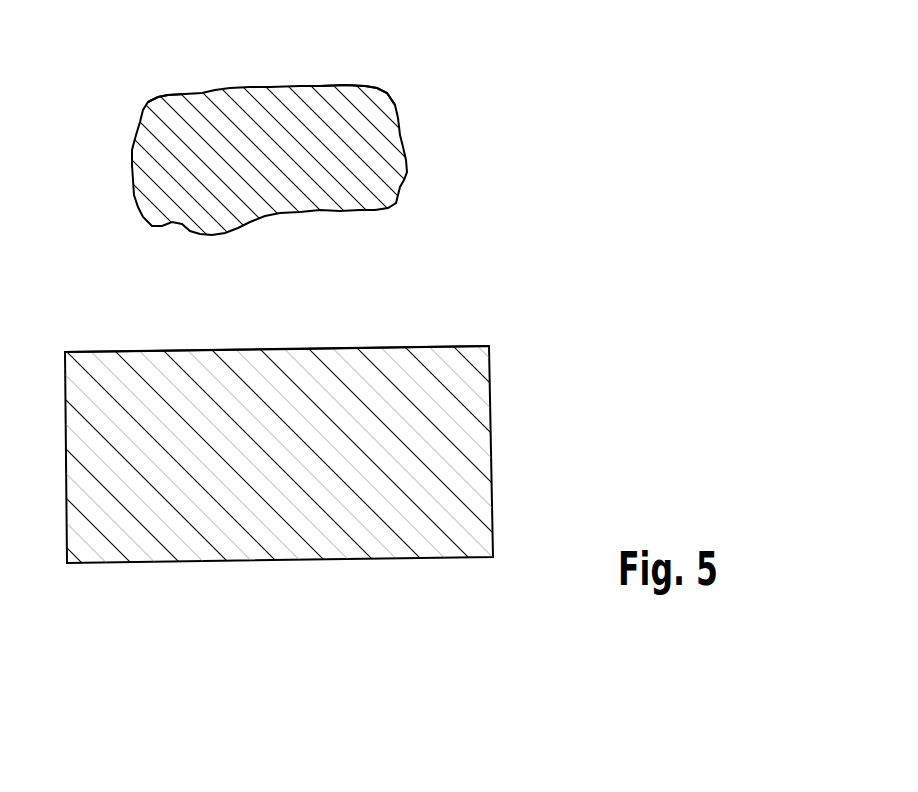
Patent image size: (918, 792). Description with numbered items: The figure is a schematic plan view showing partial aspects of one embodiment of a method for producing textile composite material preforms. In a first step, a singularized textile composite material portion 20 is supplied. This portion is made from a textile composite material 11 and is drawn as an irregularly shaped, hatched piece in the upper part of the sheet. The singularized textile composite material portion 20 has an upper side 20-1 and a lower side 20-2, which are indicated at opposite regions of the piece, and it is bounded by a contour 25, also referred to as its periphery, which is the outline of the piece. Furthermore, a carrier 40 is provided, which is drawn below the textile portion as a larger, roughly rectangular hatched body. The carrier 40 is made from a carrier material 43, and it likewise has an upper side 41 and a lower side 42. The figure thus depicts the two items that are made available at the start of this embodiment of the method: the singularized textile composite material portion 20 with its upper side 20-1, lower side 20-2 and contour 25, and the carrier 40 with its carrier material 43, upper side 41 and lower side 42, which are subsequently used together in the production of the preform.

The singularized textile composite material portion 20 is at (432, 130).
The upper side 20-1 is at (178, 140).
The lower side 20-2 is at (384, 93).
The textile composite material 11 is at (250, 122).
The contour 25 is at (341, 82).
The carrier 40 is at (425, 330).
The upper side 41 is at (163, 397).
The lower side 42 is at (362, 408).
The carrier material 43 is at (228, 380).